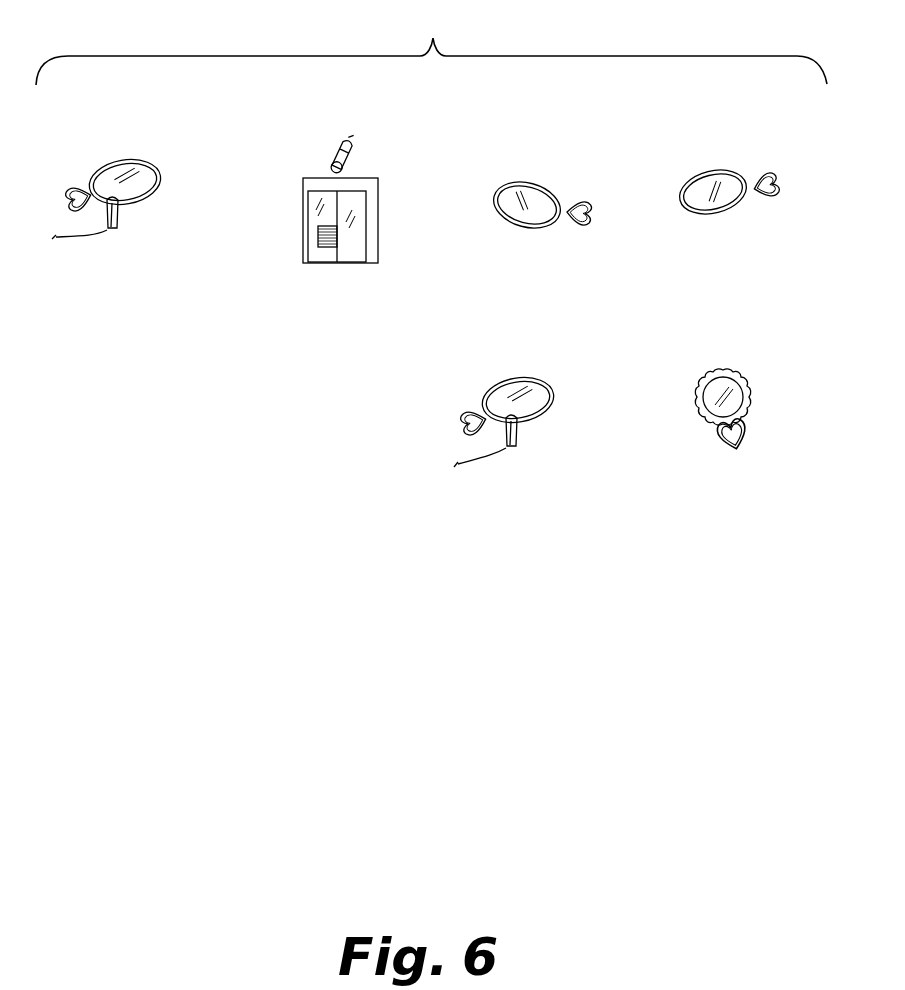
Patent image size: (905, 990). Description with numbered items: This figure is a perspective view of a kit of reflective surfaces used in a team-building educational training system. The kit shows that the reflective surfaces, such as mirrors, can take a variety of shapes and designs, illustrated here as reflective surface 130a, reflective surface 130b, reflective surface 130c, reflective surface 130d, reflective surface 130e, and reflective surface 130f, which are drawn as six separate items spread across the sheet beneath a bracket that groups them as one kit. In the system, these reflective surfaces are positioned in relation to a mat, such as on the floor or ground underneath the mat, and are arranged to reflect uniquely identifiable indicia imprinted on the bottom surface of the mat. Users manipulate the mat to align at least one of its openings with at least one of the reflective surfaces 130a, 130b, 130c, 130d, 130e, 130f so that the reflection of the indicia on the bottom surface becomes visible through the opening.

The reflective surface 130a is at (149, 205).
The reflective surface 130b is at (322, 263).
The reflective surface 130c is at (545, 231).
The reflective surface 130d is at (540, 425).
The reflective surface 130e is at (723, 218).
The reflective surface 130f is at (739, 452).